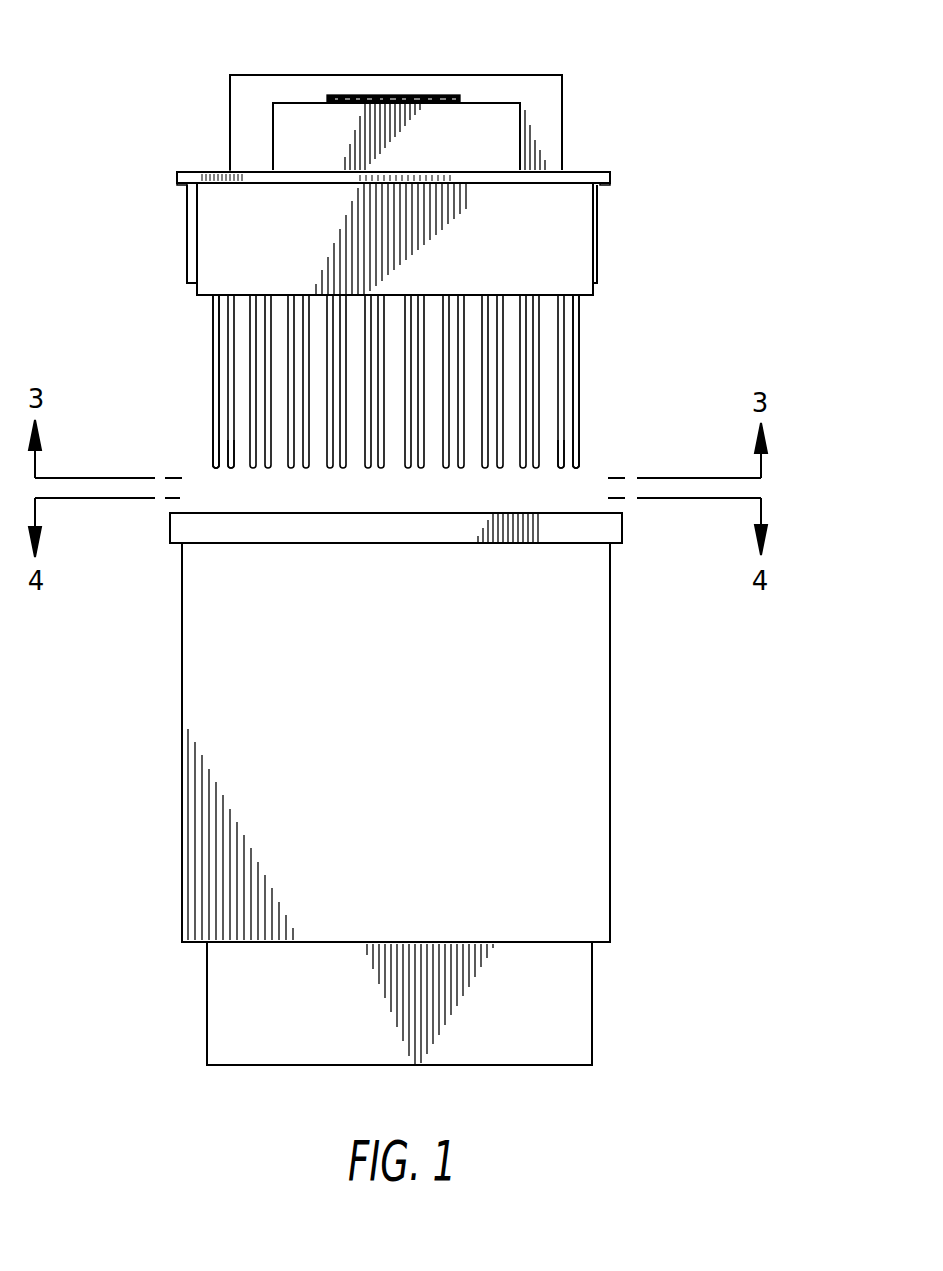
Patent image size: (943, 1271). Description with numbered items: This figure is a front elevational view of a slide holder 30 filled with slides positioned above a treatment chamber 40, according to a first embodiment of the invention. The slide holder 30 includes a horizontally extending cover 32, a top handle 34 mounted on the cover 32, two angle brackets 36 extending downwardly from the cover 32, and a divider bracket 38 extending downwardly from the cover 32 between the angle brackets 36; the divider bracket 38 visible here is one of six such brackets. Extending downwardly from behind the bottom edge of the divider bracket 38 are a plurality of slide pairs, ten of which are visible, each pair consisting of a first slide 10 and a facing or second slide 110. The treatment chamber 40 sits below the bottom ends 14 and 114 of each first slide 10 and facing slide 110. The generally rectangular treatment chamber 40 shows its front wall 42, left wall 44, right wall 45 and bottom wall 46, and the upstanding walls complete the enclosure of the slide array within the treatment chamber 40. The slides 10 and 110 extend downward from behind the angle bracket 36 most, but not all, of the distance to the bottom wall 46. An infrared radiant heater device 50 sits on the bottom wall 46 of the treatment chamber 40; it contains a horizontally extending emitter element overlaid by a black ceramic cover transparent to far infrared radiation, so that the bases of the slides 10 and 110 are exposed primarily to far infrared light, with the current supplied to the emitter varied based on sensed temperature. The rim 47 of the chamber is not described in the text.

The first slide 10 is at (215, 348).
The bottom end of first slide 14 is at (216, 471).
The slide holder 30 is at (222, 166).
The cover 32 is at (583, 172).
The top handle 34 is at (545, 88).
The angle bracket 36 is at (597, 208).
The divider bracket 38 is at (568, 258).
The treatment chamber 40 is at (182, 645).
The front wall 42 is at (228, 784).
The left wall 44 is at (182, 722).
The right wall 45 is at (612, 716).
The bottom wall 46 is at (612, 946).
The rim flange 47 is at (613, 525).
The infrared radiant heater device 50 is at (228, 992).
The facing slide 110 is at (233, 328).
The bottom end of facing slide 114 is at (233, 468).